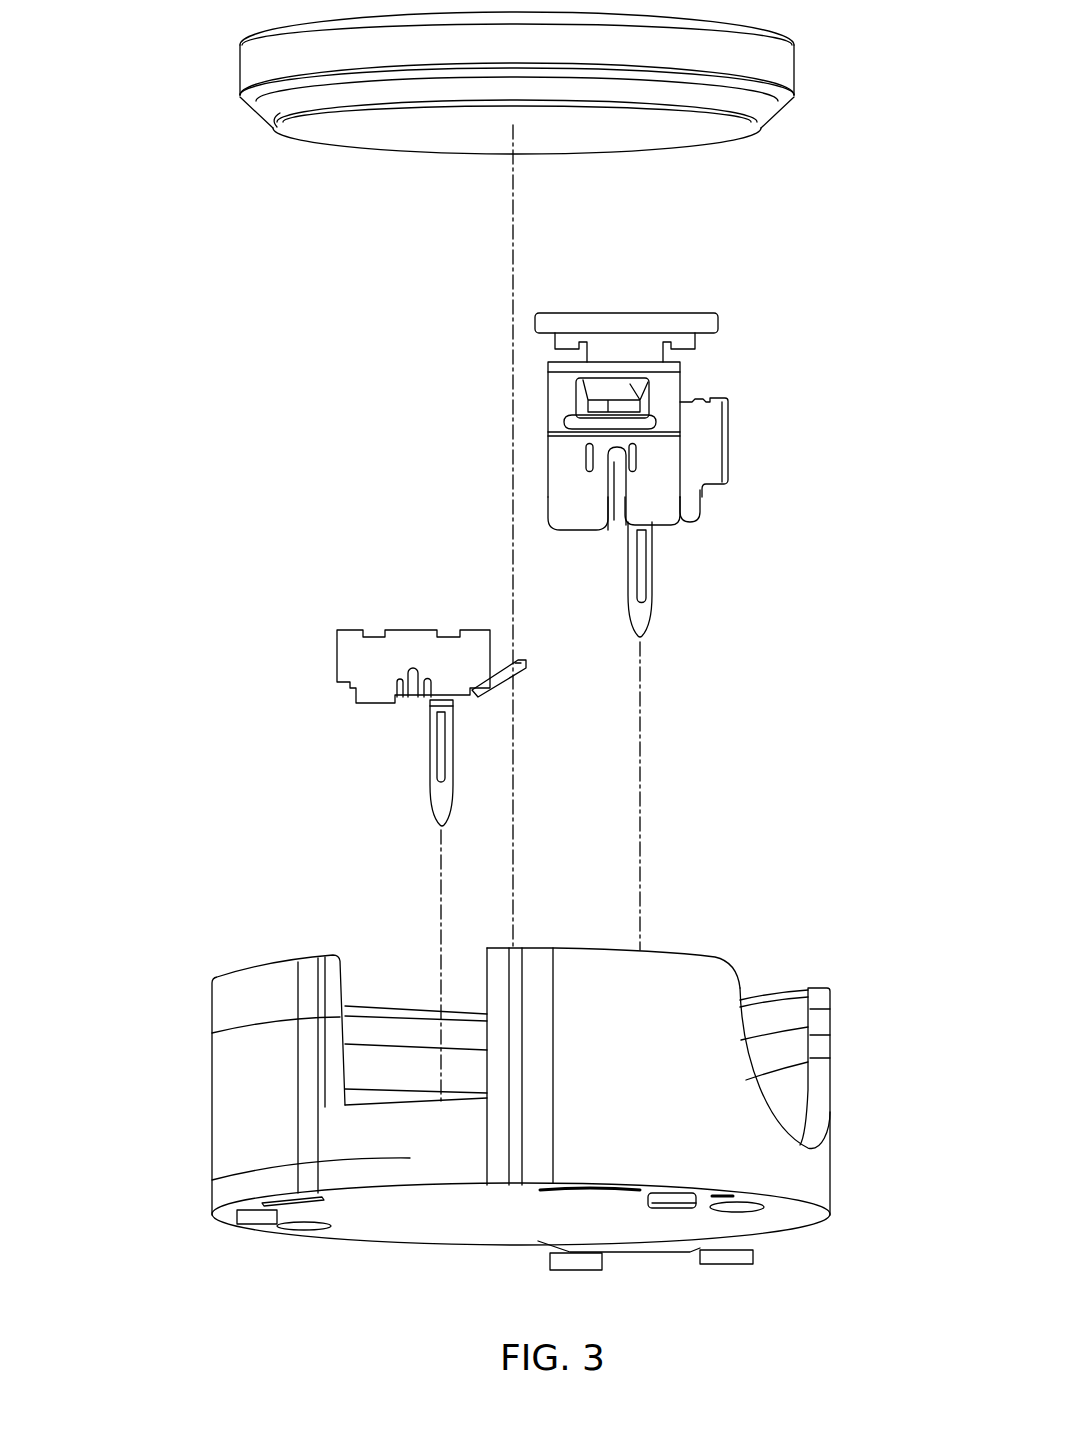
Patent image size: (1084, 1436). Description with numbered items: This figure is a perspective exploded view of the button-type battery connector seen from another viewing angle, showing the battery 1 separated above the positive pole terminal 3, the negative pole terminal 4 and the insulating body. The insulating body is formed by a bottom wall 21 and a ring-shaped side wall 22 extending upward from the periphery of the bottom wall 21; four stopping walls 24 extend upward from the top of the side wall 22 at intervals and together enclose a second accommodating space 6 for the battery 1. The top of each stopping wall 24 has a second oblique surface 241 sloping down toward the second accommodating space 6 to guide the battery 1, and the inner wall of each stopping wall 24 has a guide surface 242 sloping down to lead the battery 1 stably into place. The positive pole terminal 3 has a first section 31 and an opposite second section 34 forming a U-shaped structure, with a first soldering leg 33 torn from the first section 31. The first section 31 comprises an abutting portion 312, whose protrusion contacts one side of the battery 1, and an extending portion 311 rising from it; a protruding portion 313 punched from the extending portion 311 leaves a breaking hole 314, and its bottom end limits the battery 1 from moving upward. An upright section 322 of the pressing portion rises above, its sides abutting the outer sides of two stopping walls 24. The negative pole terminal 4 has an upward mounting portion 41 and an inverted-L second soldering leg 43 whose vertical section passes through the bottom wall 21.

The battery 1 is at (796, 47).
The positive pole terminal 3 is at (573, 441).
The first section 31 is at (565, 446).
The extending portion 311 is at (628, 429).
The abutting portion 312 is at (560, 468).
The protruding portion 313 is at (632, 401).
The breaking hole 314 is at (650, 426).
The upright section 322 is at (625, 320).
The first soldering leg 33 is at (652, 607).
The second section 34 is at (708, 493).
The negative pole terminal 4 is at (401, 686).
The mounting portion 41 is at (403, 650).
The second soldering leg 43 is at (438, 784).
The second accommodating space 6 is at (377, 1030).
The bottom wall 21 is at (395, 1222).
The side wall 22 is at (337, 1018).
The stopping wall 24 is at (821, 987).
The second oblique surface 241 is at (815, 985).
The guide surface 242 is at (808, 1057).